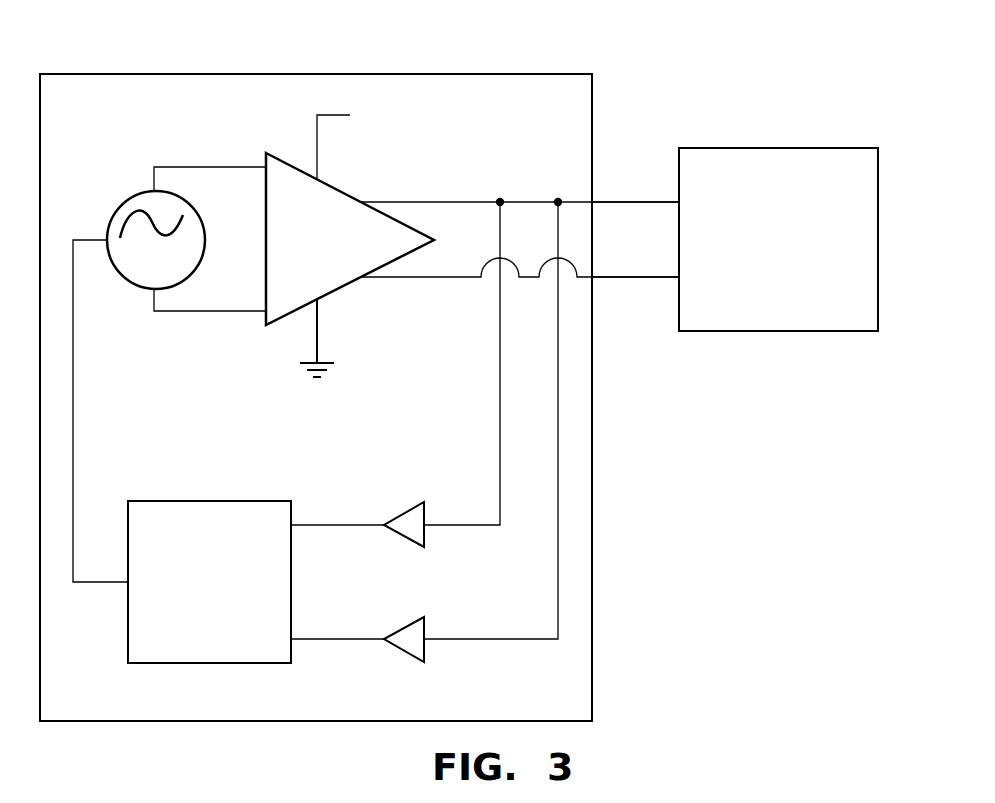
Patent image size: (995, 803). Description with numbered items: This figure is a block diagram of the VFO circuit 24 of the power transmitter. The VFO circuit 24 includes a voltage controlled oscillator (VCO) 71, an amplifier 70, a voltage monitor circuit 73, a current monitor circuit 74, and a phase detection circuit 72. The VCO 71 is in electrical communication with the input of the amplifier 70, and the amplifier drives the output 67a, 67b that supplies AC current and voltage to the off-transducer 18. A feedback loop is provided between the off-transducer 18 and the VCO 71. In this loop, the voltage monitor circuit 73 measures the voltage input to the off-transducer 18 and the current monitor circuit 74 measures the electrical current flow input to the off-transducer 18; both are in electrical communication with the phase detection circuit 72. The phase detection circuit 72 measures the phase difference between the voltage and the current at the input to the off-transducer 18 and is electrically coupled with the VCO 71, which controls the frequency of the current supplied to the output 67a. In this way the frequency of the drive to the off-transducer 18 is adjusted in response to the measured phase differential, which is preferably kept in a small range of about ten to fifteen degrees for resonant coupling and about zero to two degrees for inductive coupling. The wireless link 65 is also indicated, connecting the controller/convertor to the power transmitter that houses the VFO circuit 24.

The VFO circuit 24 is at (540, 72).
The voltage controlled oscillator 71 is at (130, 197).
The amplifier 70 is at (337, 187).
The output 67a is at (628, 202).
The output 67b is at (628, 277).
The off-transducer 18 is at (802, 331).
The phase detection circuit 72 is at (167, 501).
The voltage monitor circuit 73 is at (424, 510).
The current monitor circuit 74 is at (424, 647).
The wireless link 65 is at (111, 628).